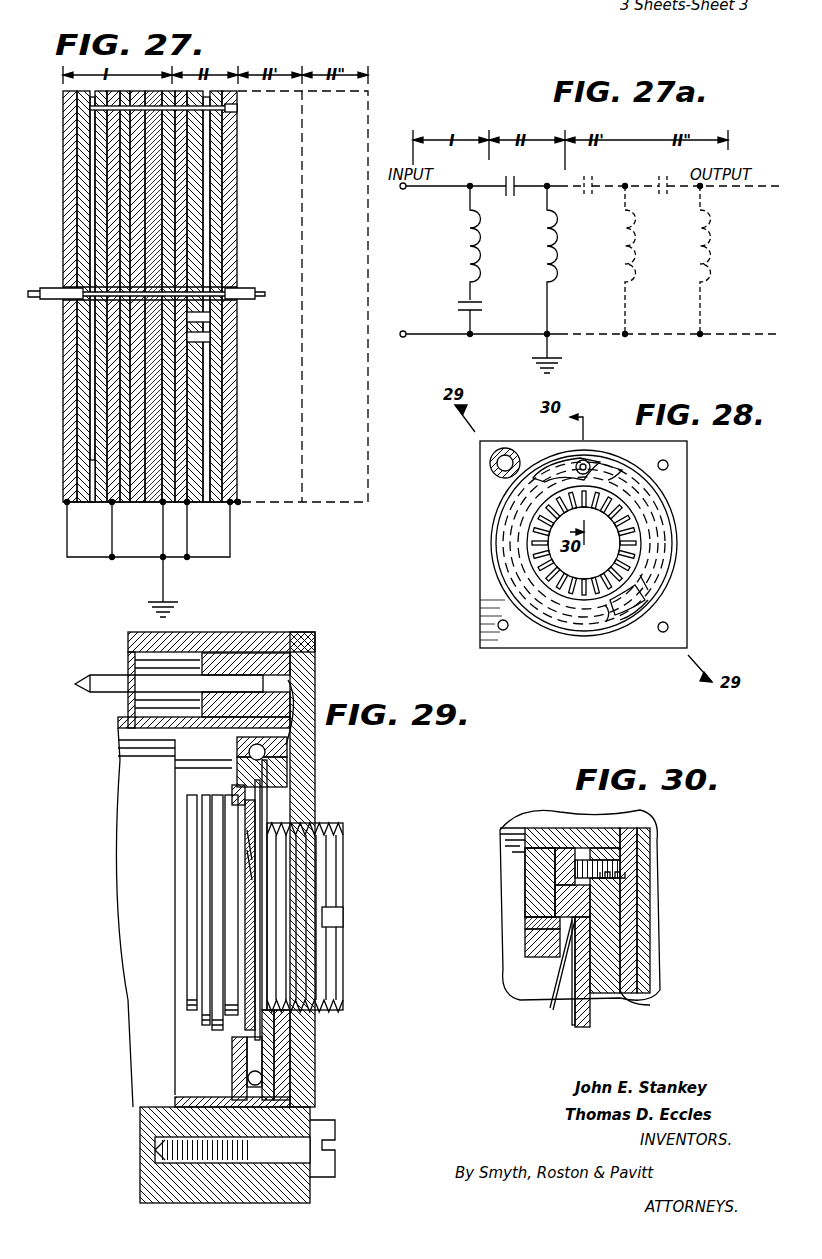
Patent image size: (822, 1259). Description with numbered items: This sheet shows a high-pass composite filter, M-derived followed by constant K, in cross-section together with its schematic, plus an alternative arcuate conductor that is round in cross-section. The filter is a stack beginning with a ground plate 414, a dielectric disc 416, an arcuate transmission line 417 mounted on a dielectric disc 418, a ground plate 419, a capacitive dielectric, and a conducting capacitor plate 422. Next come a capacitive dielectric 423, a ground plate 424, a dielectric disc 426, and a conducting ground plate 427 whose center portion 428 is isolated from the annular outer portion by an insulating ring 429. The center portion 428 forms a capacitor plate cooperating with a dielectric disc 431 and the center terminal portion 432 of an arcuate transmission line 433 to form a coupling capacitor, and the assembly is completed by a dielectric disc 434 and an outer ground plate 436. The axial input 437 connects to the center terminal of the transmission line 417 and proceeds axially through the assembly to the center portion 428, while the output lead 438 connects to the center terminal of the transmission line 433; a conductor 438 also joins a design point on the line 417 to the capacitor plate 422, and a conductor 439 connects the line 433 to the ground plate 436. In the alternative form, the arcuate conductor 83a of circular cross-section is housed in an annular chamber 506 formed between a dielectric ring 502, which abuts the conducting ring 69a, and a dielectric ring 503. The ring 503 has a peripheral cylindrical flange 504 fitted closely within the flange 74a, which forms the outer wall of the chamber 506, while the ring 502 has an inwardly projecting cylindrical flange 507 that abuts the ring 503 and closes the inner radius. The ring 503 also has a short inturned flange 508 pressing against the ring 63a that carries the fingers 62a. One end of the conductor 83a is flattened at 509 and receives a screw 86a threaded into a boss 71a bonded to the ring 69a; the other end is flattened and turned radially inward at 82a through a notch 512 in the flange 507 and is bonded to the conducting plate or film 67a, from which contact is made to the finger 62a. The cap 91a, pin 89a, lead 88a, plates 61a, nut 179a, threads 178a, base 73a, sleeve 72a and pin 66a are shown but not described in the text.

In FIG. 27, the ground plate 414 is at (70, 133).
In FIG. 27, the dielectric disc 416 is at (83, 162).
In FIG. 27, the dielectric disc 418 is at (101, 195).
In FIG. 27, the conducting capacitor plate 422 is at (136, 337).
In FIG. 27, the capacitive dielectric 423 is at (150, 381).
In FIG. 27, the dielectric disc 426 is at (180, 412).
In FIG. 27, the dielectric disc 431 is at (195, 436).
In FIG. 27, the center terminal portion 432 is at (206, 265).
In FIG. 27, the arcuate transmission line 433 is at (215, 460).
In FIG. 27A, the arcuate transmission line 433 is at (555, 255).
In FIG. 27, the dielectric disc 434 is at (218, 179).
In FIG. 27, the output lead / conductor 438 is at (92, 108).
In FIG. 27, the conductor 439 is at (232, 116).
In FIG. 27, the axial input 437 is at (36, 290).
In FIG. 27, the center portion 428 is at (195, 320).
In FIG. 27, the insulating ring 429 is at (195, 337).
In FIG. 27, the arcuate transmission line 417 is at (92, 478).
In FIG. 27A, the arcuate transmission line 417 is at (463, 240).
In FIG. 27, the ground plate 419 is at (112, 510).
In FIG. 27, the ground plate 424 is at (160, 492).
In FIG. 27, the conducting ground plate 427 is at (187, 502).
In FIG. 27, the outer ground plate 436 is at (238, 505).
In FIG. 28, the flange 74a is at (680, 539).
In FIG. 29, the flange 74a is at (175, 1097).
In FIG. 30, the flange 74a is at (505, 828).
In FIG. 28, the dielectric ring 503 is at (640, 492).
In FIG. 29, the dielectric ring 503 is at (232, 1071).
In FIG. 30, the dielectric ring 503 is at (535, 871).
In FIG. 28, the ring 63a is at (635, 511).
In FIG. 29, the ring 63a is at (248, 805).
In FIG. 30, the ring 63a is at (528, 928).
In FIG. 28, the fingers 62a is at (535, 550).
In FIG. 29, the fingers 62a is at (248, 860).
In FIG. 30, the fingers 62a is at (552, 1008).
In FIG. 28, the conducting plate or film 67a is at (600, 575).
In FIG. 29, the conducting plate or film 67a is at (255, 875).
In FIG. 30, the conducting plate or film 67a is at (572, 1022).
In FIG. 28, the arcuate conductor 83a is at (548, 478).
In FIG. 29, the arcuate conductor 83a is at (280, 770).
In FIG. 28, the screw 86a is at (588, 460).
In FIG. 30, the screw 86a is at (620, 856).
In FIG. 28, the flattened portion 509 is at (645, 433).
In FIG. 30, the flattened portion 509 is at (590, 848).
In FIG. 28, the radially inturned flattened end 82a is at (640, 610).
In FIG. 29, the radially inturned flattened end 82a is at (248, 1055).
In FIG. 28, the notch 512 is at (655, 578).
In FIG. 29, the notch 512 is at (270, 1060).
In FIG. 28, the cylindrical flange 507 is at (612, 605).
In FIG. 29, the cylindrical flange 507 is at (270, 778).
In FIG. 30, the cylindrical flange 507 is at (560, 899).
In FIG. 28, the peripheral cylindrical flange 504 is at (628, 635).
In FIG. 29, the peripheral cylindrical flange 504 is at (280, 1103).
In FIG. 30, the peripheral cylindrical flange 504 is at (540, 830).
In FIG. 29, the cap 91a is at (222, 652).
In FIG. 29, the probe pin 89a is at (75, 680).
In FIG. 29, the lead wire 88a is at (293, 700).
In FIG. 29, the conducting ring or plate 69a is at (270, 755).
In FIG. 30, the conducting ring or plate 69a is at (645, 1011).
In FIG. 29, the chamber 506 is at (250, 758).
In FIG. 30, the chamber 506 is at (560, 855).
In FIG. 29, the inturned flange 508 is at (236, 789).
In FIG. 30, the inturned flange 508 is at (530, 955).
In FIG. 29, the capacitor plates 61a is at (245, 922).
In FIG. 29, the nut 179a is at (330, 806).
In FIG. 29, the threads 178a is at (340, 884).
In FIG. 29, the dielectric ring 502 is at (280, 1080).
In FIG. 30, the dielectric ring 502 is at (605, 956).
In FIG. 29, the base 73a is at (315, 1190).
In FIG. 30, the base 73a is at (645, 821).
In FIG. 30, the boss 71a is at (605, 848).
In FIG. 30, the sleeve 72a is at (628, 896).
In FIG. 30, the pin 66a is at (590, 1022).